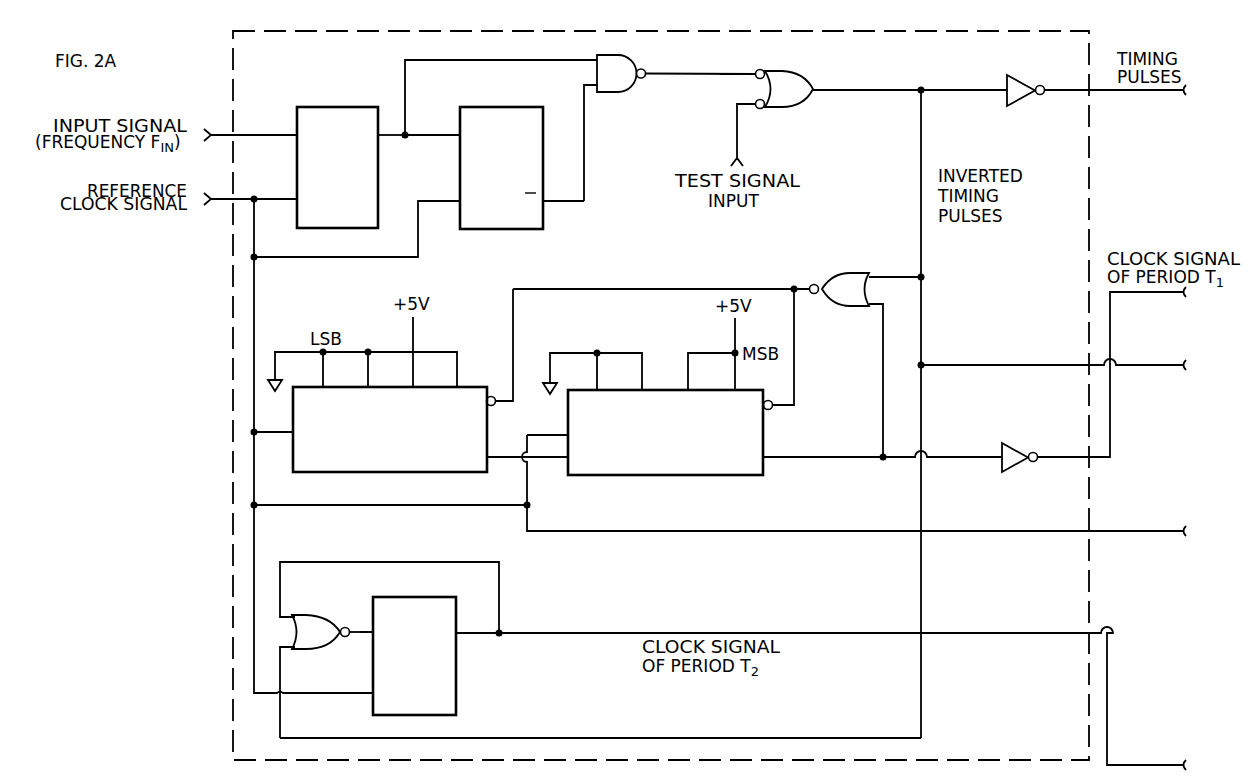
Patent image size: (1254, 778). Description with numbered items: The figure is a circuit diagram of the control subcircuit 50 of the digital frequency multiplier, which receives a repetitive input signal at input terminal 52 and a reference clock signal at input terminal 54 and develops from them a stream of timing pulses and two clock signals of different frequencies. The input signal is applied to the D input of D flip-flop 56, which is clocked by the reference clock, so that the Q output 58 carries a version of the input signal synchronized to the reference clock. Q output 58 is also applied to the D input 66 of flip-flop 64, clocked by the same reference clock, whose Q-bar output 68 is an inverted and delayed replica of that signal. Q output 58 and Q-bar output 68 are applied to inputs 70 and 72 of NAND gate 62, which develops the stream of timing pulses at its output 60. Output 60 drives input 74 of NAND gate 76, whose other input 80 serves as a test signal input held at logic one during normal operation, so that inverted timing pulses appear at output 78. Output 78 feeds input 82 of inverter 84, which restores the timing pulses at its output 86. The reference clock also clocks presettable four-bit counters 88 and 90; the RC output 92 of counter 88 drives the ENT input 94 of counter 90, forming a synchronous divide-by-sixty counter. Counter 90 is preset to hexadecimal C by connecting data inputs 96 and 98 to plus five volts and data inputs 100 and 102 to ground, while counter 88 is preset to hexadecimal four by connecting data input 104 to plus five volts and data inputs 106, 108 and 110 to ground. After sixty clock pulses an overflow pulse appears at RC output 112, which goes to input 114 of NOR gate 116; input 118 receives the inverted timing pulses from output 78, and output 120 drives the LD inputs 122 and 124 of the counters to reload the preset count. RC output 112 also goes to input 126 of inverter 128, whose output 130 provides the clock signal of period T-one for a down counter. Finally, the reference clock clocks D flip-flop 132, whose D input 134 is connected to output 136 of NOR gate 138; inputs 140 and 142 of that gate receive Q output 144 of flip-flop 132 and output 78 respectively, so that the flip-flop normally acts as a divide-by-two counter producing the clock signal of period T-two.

The control subcircuit 50 is at (230, 423).
The input terminal 52 is at (262, 132).
The input terminal 54 is at (244, 195).
The D flip-flop 56 is at (337, 107).
The Q output 58 is at (392, 137).
The output 60 is at (680, 76).
The NAND gate 62 is at (641, 60).
The D flip-flop 64 is at (507, 107).
The D input 66 is at (440, 137).
The Q-bar output 68 is at (562, 203).
The input 70 is at (575, 58).
The input 72 is at (586, 133).
The input 74 is at (742, 71).
The NAND gate 76 is at (798, 71).
The output 78 is at (858, 92).
The input 80 is at (739, 133).
The input 82 is at (962, 92).
The inverter 84 is at (1030, 78).
The output 86 is at (1068, 92).
The presettable four-bit counter 88 is at (385, 473).
The presettable four-bit counter 90 is at (668, 476).
The RC output 92 is at (503, 459).
The ENT input 94 is at (719, 485).
The data input 96 is at (734, 370).
The data input 98 is at (687, 372).
The data input 100 is at (641, 372).
The data input 102 is at (596, 370).
The data input 104 is at (414, 369).
The data input 106 is at (458, 369).
The data input 108 is at (369, 368).
The data input 110 is at (322, 366).
The RC output 112 is at (808, 459).
The input 114 is at (883, 338).
The NOR gate 116 is at (837, 272).
The input 118 is at (895, 275).
The output 120 is at (800, 286).
The LD input 122 is at (502, 403).
The LD input 124 is at (783, 405).
The input 126 is at (965, 459).
The inverter 128 is at (1017, 446).
The output 130 is at (1062, 459).
The D flip-flop 132 is at (457, 700).
The D input 134 is at (371, 630).
The output 136 is at (353, 634).
The NOR gate 138 is at (302, 651).
The input 140 is at (281, 608).
The input 142 is at (290, 641).
The Q output 144 is at (478, 635).